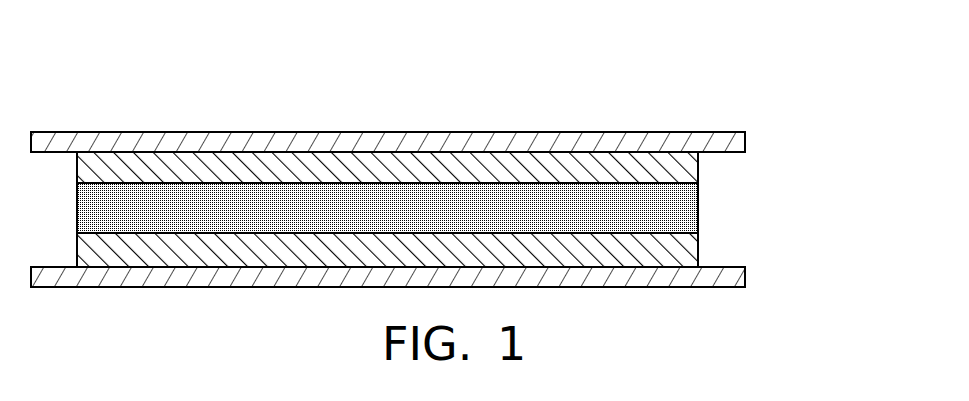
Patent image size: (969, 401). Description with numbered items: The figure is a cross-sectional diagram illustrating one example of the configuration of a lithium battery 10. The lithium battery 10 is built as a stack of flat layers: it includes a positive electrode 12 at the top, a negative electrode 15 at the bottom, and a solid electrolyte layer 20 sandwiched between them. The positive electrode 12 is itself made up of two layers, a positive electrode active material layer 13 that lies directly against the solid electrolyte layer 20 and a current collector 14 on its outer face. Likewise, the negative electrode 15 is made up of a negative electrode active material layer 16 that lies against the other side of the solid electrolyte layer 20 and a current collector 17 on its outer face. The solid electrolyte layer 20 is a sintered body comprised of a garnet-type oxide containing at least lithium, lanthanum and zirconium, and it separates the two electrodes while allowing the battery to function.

The lithium battery 10 is at (731, 68).
The positive electrode 12 is at (872, 118).
The positive electrode active material layer 13 is at (694, 173).
The current collector 14 is at (737, 143).
The negative electrode 15 is at (867, 233).
The negative electrode active material layer 16 is at (694, 245).
The current collector 17 is at (737, 271).
The solid electrolyte layer 20 is at (692, 210).